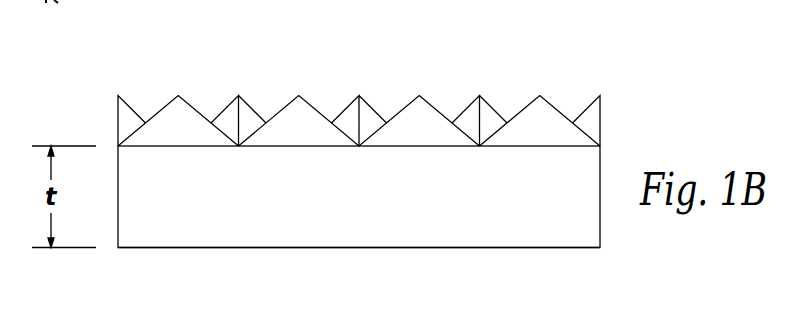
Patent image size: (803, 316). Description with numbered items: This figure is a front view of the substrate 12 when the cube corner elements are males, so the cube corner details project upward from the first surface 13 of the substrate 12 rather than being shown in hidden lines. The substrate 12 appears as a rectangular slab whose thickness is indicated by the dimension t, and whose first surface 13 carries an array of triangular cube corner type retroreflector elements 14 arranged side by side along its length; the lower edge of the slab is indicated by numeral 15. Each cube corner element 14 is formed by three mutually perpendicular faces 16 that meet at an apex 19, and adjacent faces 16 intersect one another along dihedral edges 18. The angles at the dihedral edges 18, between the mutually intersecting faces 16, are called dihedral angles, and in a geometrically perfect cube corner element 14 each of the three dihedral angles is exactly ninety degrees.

The substrate 12 is at (291, 222).
The first surface 13 is at (412, 70).
The cube corner element 14 is at (161, 104).
The bottom surface 15 is at (380, 257).
The faces 16 is at (252, 108).
The dihedral edges 18 is at (378, 108).
The apex 19 is at (540, 96).